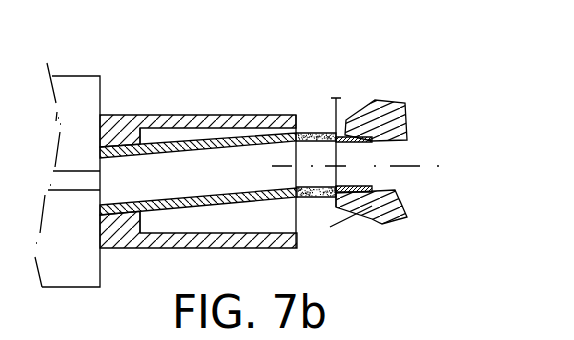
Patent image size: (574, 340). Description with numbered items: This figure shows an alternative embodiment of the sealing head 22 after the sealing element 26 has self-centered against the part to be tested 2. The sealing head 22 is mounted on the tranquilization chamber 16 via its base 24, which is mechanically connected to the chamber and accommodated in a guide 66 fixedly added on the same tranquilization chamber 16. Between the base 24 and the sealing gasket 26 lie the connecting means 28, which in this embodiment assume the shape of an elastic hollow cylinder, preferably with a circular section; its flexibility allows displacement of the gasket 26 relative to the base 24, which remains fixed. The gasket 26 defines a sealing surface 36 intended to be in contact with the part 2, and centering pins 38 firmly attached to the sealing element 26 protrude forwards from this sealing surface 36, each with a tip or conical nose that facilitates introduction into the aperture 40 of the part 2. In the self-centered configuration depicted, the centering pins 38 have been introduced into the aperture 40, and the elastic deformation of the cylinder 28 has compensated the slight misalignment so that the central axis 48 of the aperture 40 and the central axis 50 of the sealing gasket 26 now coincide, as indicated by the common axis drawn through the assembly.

The tranquilization chamber 16 is at (88, 80).
The base 24 is at (132, 118).
The sealing head 22 is at (169, 140).
The connecting means 28 is at (212, 145).
The guide 66 is at (284, 114).
The sealing element 26 is at (322, 131).
The sealing surface 36 is at (353, 118).
The part to be tested 2 is at (392, 155).
The centering pins 38 is at (375, 140).
The aperture 40 is at (396, 193).
The central axis of the aperture 48 is at (408, 147).
The central axis of the sealing gasket 50 is at (455, 163).